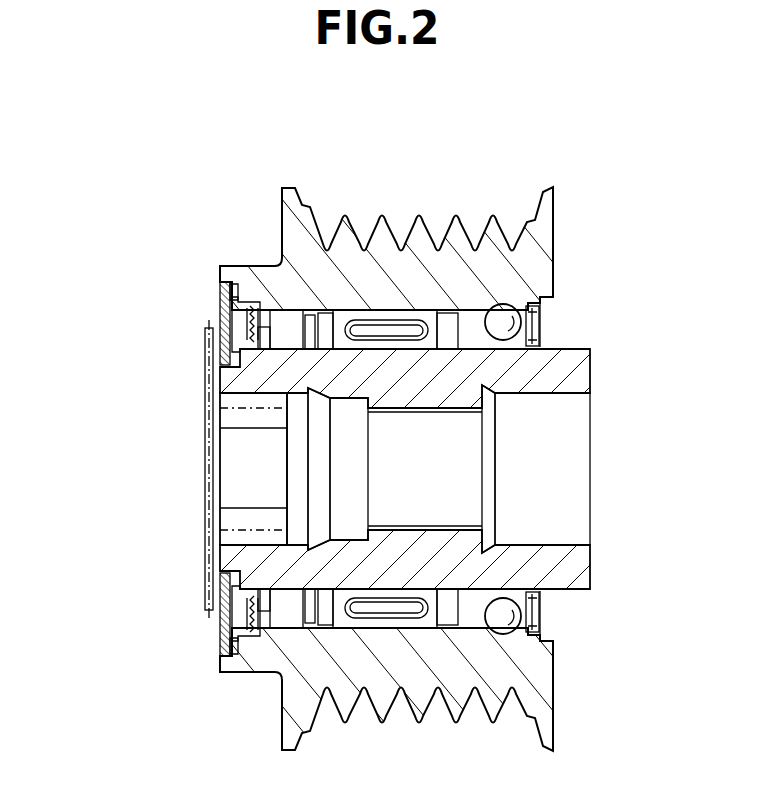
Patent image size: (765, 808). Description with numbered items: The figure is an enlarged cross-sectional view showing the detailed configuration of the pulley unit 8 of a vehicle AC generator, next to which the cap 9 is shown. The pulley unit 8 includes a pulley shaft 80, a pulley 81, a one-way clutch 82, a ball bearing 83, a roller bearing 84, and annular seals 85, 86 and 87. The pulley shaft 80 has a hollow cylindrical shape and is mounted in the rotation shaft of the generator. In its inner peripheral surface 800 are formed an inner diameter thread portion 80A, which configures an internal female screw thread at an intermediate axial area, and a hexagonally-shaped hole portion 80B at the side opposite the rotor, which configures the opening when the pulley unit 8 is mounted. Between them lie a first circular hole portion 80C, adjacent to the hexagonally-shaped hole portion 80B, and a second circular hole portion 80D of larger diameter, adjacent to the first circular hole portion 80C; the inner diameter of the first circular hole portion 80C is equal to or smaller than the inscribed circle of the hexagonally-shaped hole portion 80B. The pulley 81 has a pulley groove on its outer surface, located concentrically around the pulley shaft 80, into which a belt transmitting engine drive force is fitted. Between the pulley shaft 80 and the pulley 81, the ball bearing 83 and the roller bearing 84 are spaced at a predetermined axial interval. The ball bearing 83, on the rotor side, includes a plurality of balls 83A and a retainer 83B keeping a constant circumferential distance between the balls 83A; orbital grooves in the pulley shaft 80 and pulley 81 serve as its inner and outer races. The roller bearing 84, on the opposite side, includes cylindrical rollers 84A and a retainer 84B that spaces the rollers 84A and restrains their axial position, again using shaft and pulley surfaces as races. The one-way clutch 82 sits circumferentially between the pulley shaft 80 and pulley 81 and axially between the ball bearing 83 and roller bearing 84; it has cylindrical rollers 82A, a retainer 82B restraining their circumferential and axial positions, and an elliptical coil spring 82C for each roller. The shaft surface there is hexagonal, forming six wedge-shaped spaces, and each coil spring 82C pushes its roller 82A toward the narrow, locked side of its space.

The pulley unit 8 is at (255, 196).
The pulley 81 is at (287, 190).
The one-way clutch 82 is at (389, 364).
The cylindrical rollers 82A is at (358, 314).
The retainer 82B is at (466, 306).
The elliptical coil spring 82C is at (449, 318).
The ball bearing 83 is at (507, 302).
The balls 83A is at (546, 277).
The retainer 83B is at (539, 302).
The roller bearing 84 is at (280, 261).
The cylindrical rollers 84A is at (293, 308).
The retainer 84B is at (307, 312).
The annular seal 85 is at (548, 328).
The annular seal 86 is at (220, 320).
The annular seal 87 is at (220, 295).
The pulley shaft 80 is at (220, 373).
The inner peripheral surface 800 is at (256, 469).
The inner diameter thread portion 80A is at (385, 517).
The hexagonally-shaped hole portion 80B is at (250, 422).
The first circular hole portion 80C is at (298, 450).
The second circular hole portion 80D is at (318, 476).
The cap 9 is at (204, 563).